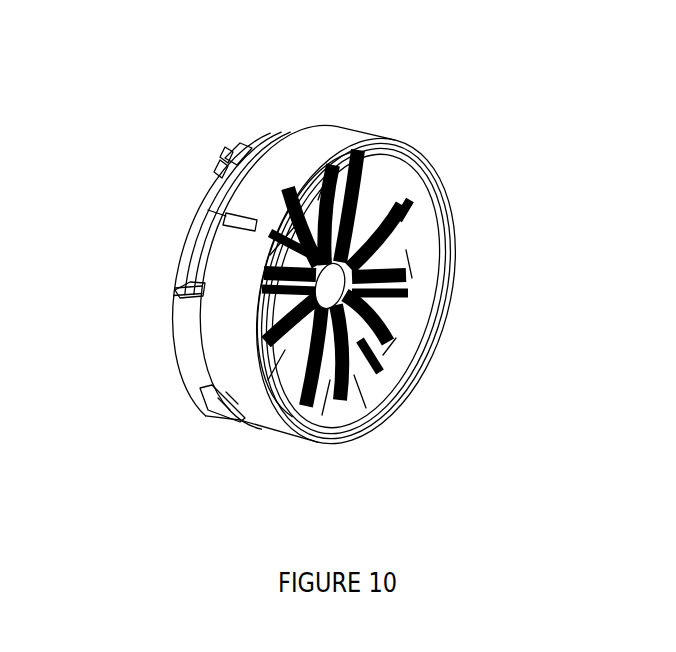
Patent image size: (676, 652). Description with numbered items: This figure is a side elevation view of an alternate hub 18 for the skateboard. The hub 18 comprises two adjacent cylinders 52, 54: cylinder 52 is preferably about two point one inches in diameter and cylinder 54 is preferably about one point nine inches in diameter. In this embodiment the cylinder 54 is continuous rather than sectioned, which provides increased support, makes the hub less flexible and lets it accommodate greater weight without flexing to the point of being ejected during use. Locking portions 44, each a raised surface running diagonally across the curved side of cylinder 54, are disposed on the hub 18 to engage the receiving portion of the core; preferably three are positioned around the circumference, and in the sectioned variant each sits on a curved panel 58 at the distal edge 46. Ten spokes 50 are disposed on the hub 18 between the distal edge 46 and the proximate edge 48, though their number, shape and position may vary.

The hub 18 is at (177, 72).
The locking portion 44 is at (235, 150).
The distal edge 46 is at (178, 333).
The proximate edge 48 is at (447, 202).
The spokes 50 is at (408, 273).
The cylinder 52 is at (300, 480).
The cylinder 54 is at (207, 470).
The curved panel 58 is at (195, 198).